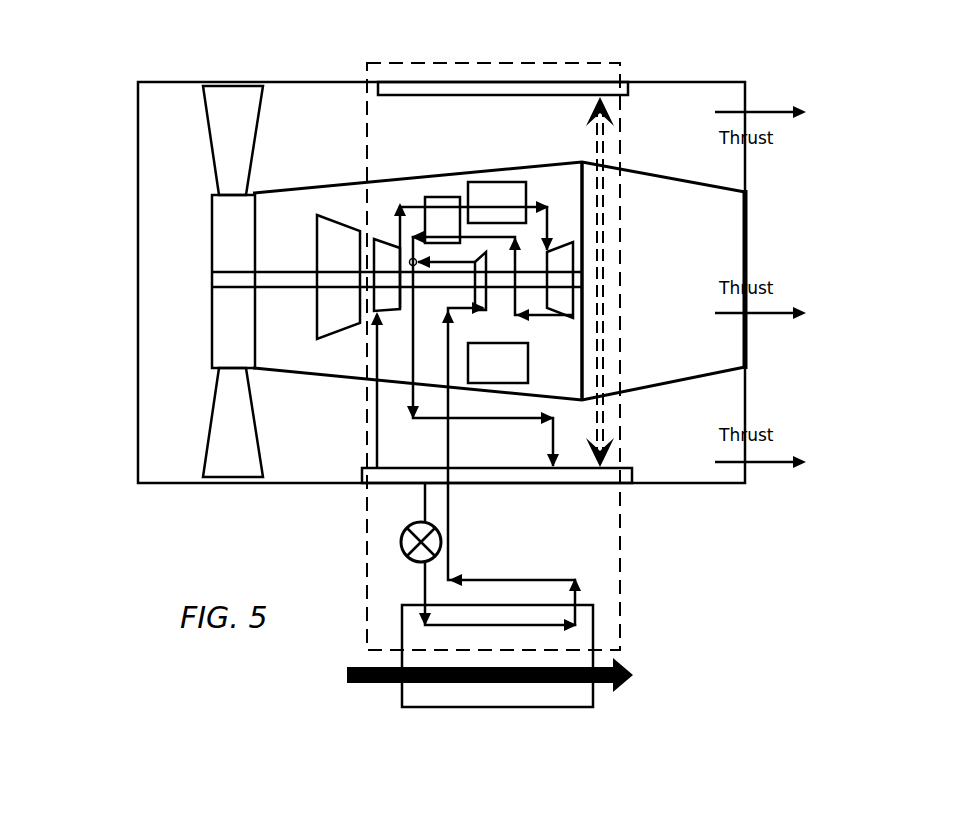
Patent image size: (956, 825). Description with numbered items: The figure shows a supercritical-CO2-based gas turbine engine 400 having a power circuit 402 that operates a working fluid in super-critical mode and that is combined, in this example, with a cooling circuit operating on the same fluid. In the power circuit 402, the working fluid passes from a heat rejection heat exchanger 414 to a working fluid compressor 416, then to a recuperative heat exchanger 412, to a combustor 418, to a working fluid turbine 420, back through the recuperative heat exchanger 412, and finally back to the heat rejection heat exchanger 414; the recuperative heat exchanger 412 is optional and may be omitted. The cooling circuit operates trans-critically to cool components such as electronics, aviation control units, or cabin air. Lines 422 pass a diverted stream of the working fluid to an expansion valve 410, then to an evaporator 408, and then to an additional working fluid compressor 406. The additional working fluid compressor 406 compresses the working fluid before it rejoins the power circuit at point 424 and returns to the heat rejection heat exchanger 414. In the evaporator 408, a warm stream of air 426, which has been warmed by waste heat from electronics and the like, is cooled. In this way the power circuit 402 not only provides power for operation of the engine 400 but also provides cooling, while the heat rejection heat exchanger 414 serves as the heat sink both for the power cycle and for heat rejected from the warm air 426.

The gas turbine engine 400 is at (671, 44).
The power circuit 402 is at (532, 62).
The additional working fluid compressor 406 is at (487, 311).
The evaporator 408 is at (594, 697).
The expansion valve 410 is at (401, 541).
The recuperative heat exchanger 412 is at (438, 196).
The heat rejection heat exchanger 414 is at (580, 487).
The working fluid compressor 416 is at (410, 262).
The combustor 418 is at (490, 181).
The working fluid turbine 420 is at (565, 242).
The lines 422 is at (445, 263).
The point 424 is at (386, 246).
The warm stream of air 426 is at (347, 678).